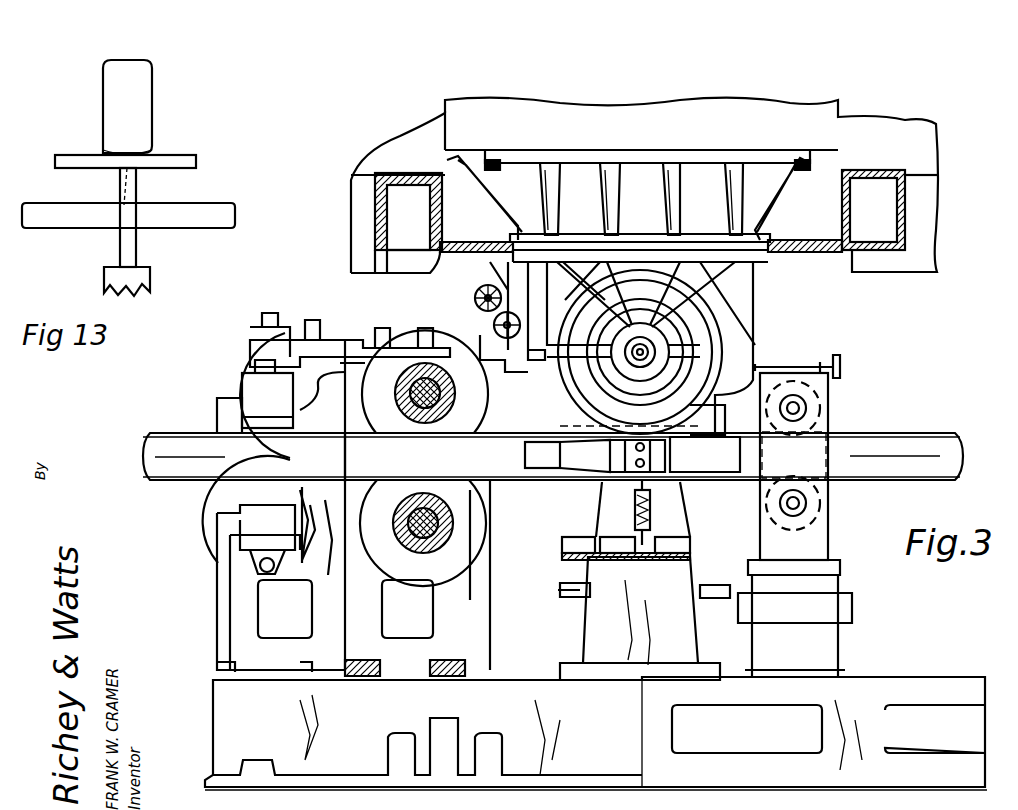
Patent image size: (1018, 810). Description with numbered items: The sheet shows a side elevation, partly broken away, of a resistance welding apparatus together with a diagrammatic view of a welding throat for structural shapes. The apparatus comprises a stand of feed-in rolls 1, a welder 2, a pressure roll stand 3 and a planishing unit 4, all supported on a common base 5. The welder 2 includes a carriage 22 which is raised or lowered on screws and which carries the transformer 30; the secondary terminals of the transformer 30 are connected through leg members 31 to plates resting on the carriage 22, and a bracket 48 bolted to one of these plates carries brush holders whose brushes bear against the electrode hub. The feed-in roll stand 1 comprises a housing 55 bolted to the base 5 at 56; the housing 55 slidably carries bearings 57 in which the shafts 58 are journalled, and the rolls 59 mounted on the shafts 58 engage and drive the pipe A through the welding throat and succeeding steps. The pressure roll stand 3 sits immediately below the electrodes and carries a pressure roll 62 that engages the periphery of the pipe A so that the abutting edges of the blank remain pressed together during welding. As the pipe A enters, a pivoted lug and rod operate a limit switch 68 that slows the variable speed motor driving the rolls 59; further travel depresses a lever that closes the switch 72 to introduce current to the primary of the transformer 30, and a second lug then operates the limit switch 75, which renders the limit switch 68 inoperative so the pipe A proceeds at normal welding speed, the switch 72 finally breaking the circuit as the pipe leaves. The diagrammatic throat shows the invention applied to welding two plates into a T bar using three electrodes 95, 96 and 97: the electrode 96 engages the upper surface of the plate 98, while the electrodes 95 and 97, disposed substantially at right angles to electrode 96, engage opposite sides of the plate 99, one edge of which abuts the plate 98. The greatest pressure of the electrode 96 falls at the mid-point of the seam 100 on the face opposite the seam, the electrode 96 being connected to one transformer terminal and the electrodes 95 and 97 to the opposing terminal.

In FIG. 3, the stand of feed-in rolls 1 is at (310, 345).
In FIG. 3, the welder 2 is at (765, 263).
In FIG. 3, the pressure roll stand 3 is at (595, 625).
In FIG. 3, the planishing unit 4 is at (828, 405).
In FIG. 3, the base 5 is at (870, 690).
In FIG. 3, the carriage 22 is at (352, 210).
In FIG. 3, the transformer 30 is at (642, 105).
In FIG. 3, the leg members 31 is at (615, 165).
In FIG. 3, the bracket 48 is at (738, 330).
In FIG. 3, the housing 55 is at (215, 608).
In FIG. 3, the bolting 56 is at (228, 668).
In FIG. 3, the bearings 57 is at (245, 388).
In FIG. 3, the shafts 58 is at (408, 378).
In FIG. 3, the rolls 59 is at (212, 405).
In FIG. 3, the pressure roll 62 is at (658, 512).
In FIG. 3, the limit switch 68 is at (567, 553).
In FIG. 3, the switch 72 is at (608, 560).
In FIG. 3, the limit switch 75 is at (665, 555).
In FIG. 13, the electrode 95 is at (195, 230).
In FIG. 13, the electrode 96 is at (140, 118).
In FIG. 13, the electrode 97 is at (75, 230).
In FIG. 13, the plate 98 is at (178, 158).
In FIG. 13, the plate 99 is at (138, 250).
In FIG. 13, the seam 100 is at (138, 172).
In FIG. 3, the pipe A is at (918, 432).